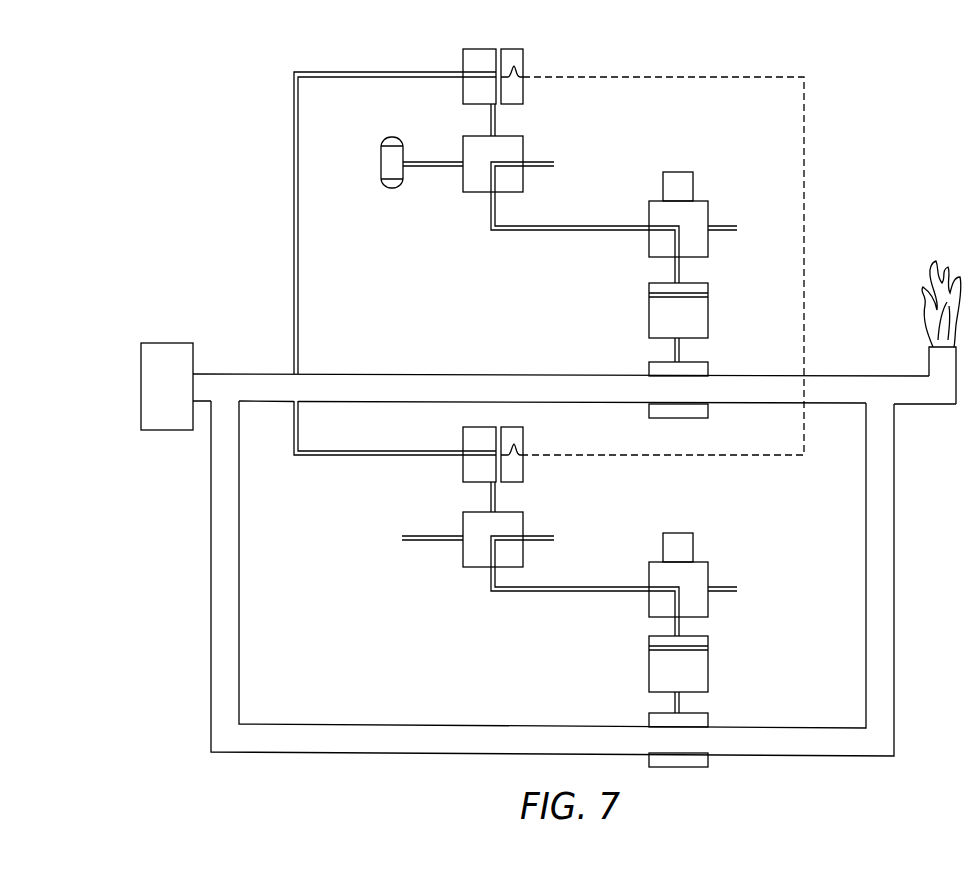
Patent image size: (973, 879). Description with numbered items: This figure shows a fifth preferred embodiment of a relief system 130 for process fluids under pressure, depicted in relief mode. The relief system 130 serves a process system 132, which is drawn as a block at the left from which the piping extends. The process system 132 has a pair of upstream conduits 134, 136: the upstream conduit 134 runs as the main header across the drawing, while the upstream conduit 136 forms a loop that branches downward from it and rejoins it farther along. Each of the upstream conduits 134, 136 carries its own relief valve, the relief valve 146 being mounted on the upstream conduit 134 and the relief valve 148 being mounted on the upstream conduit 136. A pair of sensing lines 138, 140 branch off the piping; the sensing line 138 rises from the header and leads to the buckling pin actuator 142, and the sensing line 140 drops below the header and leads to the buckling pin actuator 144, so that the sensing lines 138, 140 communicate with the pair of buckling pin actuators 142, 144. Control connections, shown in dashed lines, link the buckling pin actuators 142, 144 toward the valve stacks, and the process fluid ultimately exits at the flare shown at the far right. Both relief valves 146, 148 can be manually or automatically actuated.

The relief system 130 is at (140, 105).
The process system 132 is at (173, 343).
The upstream conduit 134 is at (262, 374).
The upstream conduit 136 is at (302, 752).
The sensing line 138 is at (293, 193).
The sensing line 140 is at (327, 457).
The buckling pin actuator 142 is at (480, 49).
The buckling pin actuator 144 is at (483, 427).
The relief valve 146 is at (708, 367).
The relief valve 148 is at (688, 767).